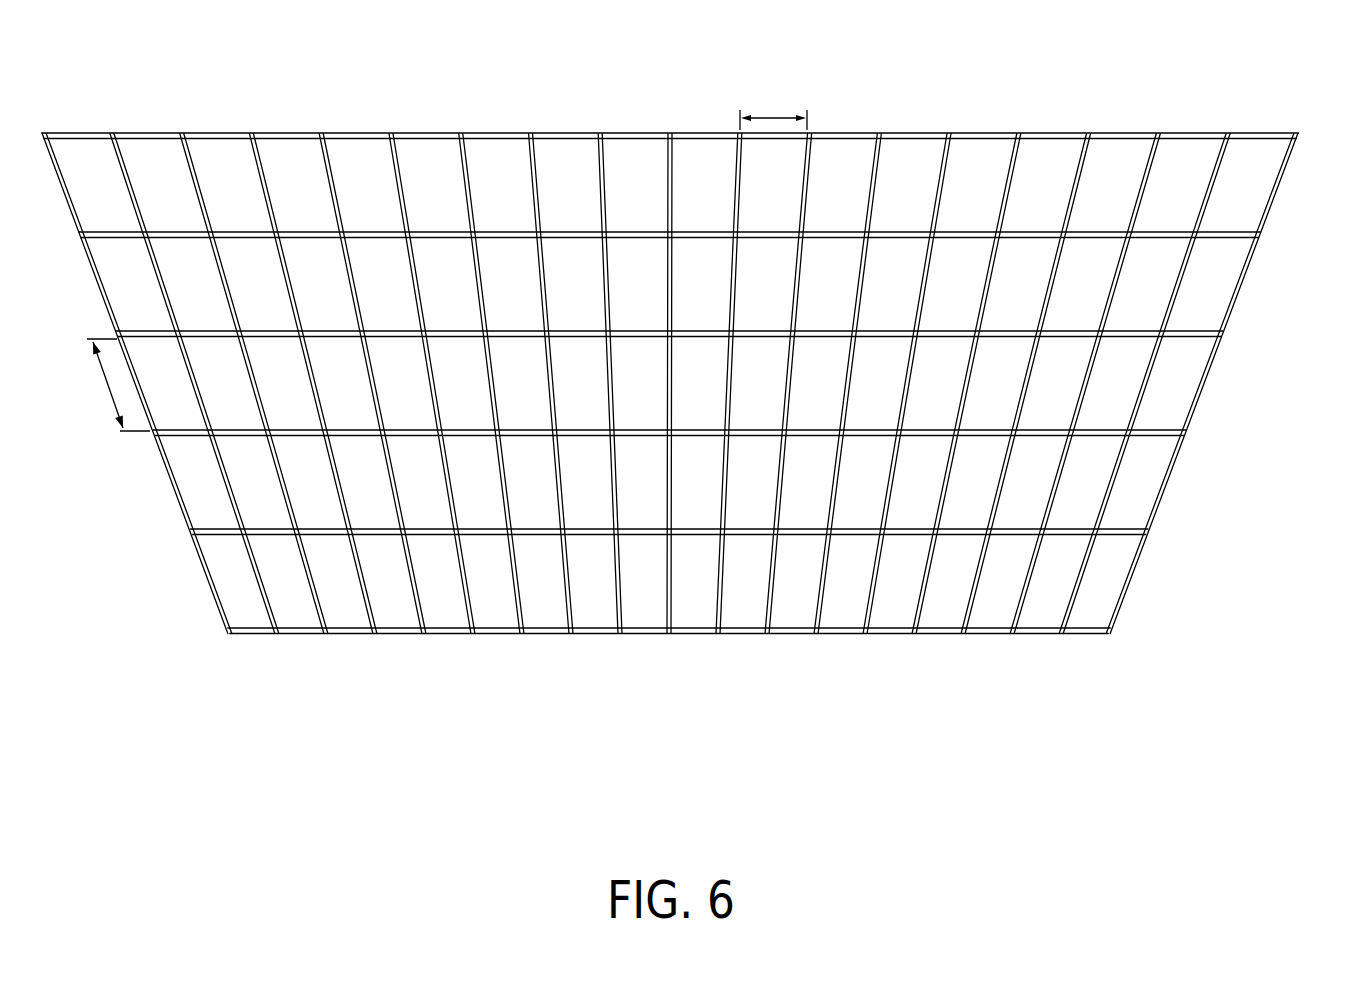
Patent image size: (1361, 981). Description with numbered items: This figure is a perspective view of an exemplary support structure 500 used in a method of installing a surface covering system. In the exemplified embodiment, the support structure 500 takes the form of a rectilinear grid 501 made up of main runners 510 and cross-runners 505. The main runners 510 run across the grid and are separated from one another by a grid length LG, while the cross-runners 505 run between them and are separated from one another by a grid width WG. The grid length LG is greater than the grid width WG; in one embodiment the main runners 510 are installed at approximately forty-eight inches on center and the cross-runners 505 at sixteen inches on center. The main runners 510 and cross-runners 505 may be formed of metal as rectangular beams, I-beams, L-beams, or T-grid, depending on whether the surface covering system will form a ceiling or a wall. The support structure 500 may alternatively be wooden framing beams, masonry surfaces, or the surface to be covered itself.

The support structure 500 is at (701, 394).
The rectilinear grid 501 is at (452, 645).
The cross-runners 505 is at (540, 175).
The main runners 510 is at (300, 232).
The grid width WG is at (773, 107).
The grid length LG is at (112, 388).